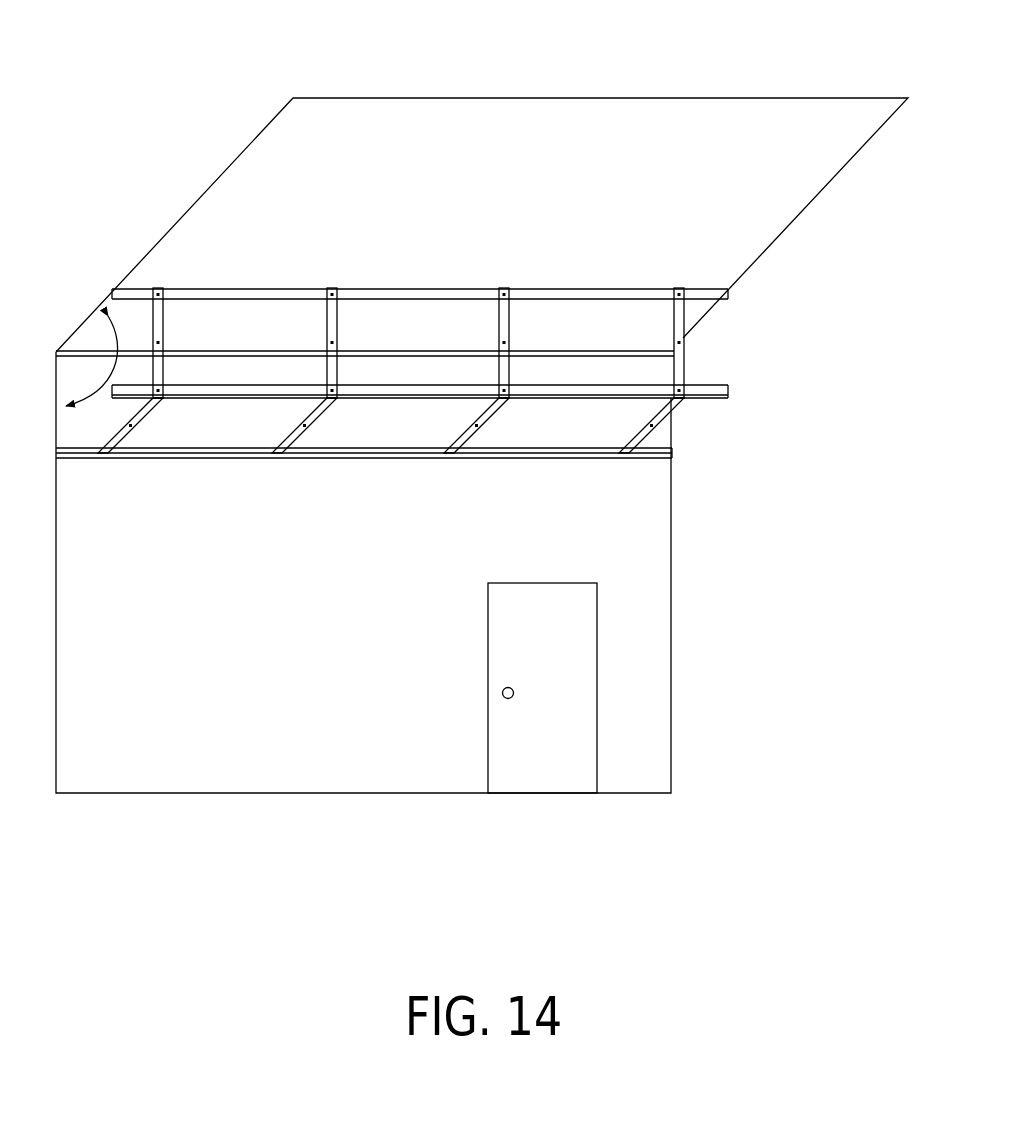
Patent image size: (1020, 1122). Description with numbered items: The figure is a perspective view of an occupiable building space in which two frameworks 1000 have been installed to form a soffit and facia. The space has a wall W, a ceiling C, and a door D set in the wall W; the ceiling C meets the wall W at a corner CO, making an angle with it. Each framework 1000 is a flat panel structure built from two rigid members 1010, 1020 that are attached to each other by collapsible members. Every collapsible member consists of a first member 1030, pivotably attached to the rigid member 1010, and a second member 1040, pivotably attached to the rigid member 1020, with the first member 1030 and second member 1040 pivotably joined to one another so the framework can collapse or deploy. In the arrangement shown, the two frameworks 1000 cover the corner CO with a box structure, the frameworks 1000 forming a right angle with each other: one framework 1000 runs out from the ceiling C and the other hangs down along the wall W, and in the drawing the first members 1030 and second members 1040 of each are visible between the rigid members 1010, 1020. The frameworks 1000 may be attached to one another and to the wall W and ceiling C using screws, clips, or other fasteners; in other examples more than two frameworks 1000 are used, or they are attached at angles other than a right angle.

The framework 1000 is at (292, 281).
The rigid member 1010 is at (722, 294).
The rigid member 1020 is at (724, 387).
The first member 1030 is at (685, 322).
The second member 1040 is at (683, 368).
The ceiling C is at (592, 193).
The corner CO is at (93, 352).
The wall W is at (637, 642).
The door D is at (551, 727).